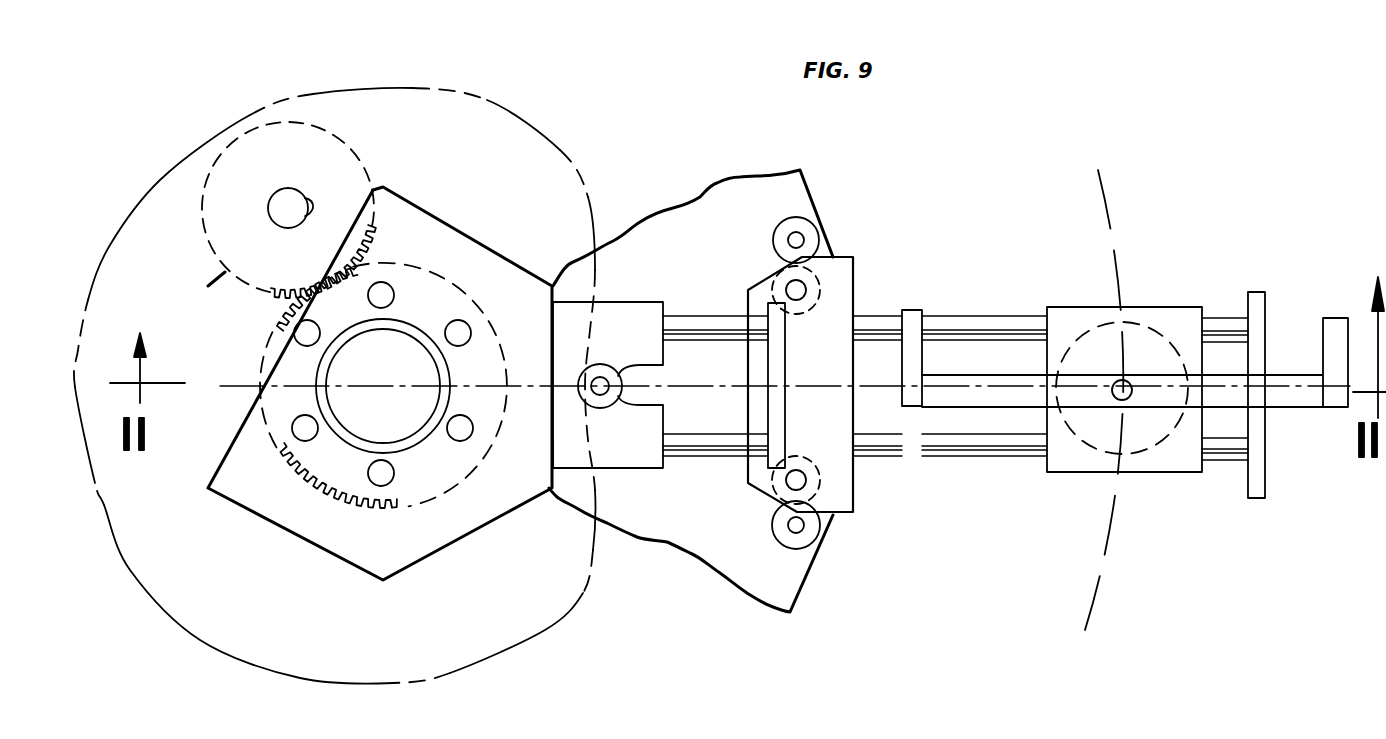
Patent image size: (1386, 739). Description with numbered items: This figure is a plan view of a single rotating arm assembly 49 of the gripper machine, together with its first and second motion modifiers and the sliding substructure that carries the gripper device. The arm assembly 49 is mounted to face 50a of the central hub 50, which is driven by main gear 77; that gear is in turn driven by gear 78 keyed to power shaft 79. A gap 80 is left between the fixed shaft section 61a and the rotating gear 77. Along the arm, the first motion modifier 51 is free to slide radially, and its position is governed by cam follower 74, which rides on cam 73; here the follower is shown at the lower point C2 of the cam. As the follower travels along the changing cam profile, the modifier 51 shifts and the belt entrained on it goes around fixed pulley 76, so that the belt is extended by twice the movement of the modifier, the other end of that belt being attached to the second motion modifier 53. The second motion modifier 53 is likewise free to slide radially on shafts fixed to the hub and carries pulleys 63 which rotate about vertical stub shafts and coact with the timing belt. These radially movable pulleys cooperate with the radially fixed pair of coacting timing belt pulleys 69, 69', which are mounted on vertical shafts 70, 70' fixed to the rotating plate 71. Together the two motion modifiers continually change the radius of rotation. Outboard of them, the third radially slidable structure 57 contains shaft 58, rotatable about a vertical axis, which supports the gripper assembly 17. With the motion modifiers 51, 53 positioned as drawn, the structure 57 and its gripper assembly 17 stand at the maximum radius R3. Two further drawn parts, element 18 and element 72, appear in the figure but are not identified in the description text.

The cam 73 is at (547, 137).
The gear 78 is at (330, 160).
The power shaft 79 is at (282, 196).
The main gear 77 is at (430, 297).
The face of central hub 50a is at (566, 300).
The radial arm 49 is at (718, 186).
The first motion modifier 51 is at (640, 302).
The vertical shaft 70 is at (768, 222).
The timing belt pulley 69 is at (829, 218).
The second motion modifier 53 is at (862, 292).
The collar 18 is at (912, 325).
The maximum radius R3 is at (1105, 186).
The third radially slidable structure 57 is at (1160, 300).
The lower point of cam C2 is at (580, 372).
The cam follower 74 is at (606, 377).
The pulley 63 is at (797, 314).
The gripper assembly 17 is at (995, 398).
The shaft 58 is at (1124, 392).
The carriage block 72 is at (1093, 428).
The fixed pulley 76 is at (553, 442).
The vertical shaft 70' is at (760, 523).
The timing belt pulley 69' is at (828, 529).
The rotating plate 71 is at (680, 530).
The central hub 50 is at (397, 532).
The gap 80 is at (425, 437).
The fixed shaft section 61a is at (376, 420).